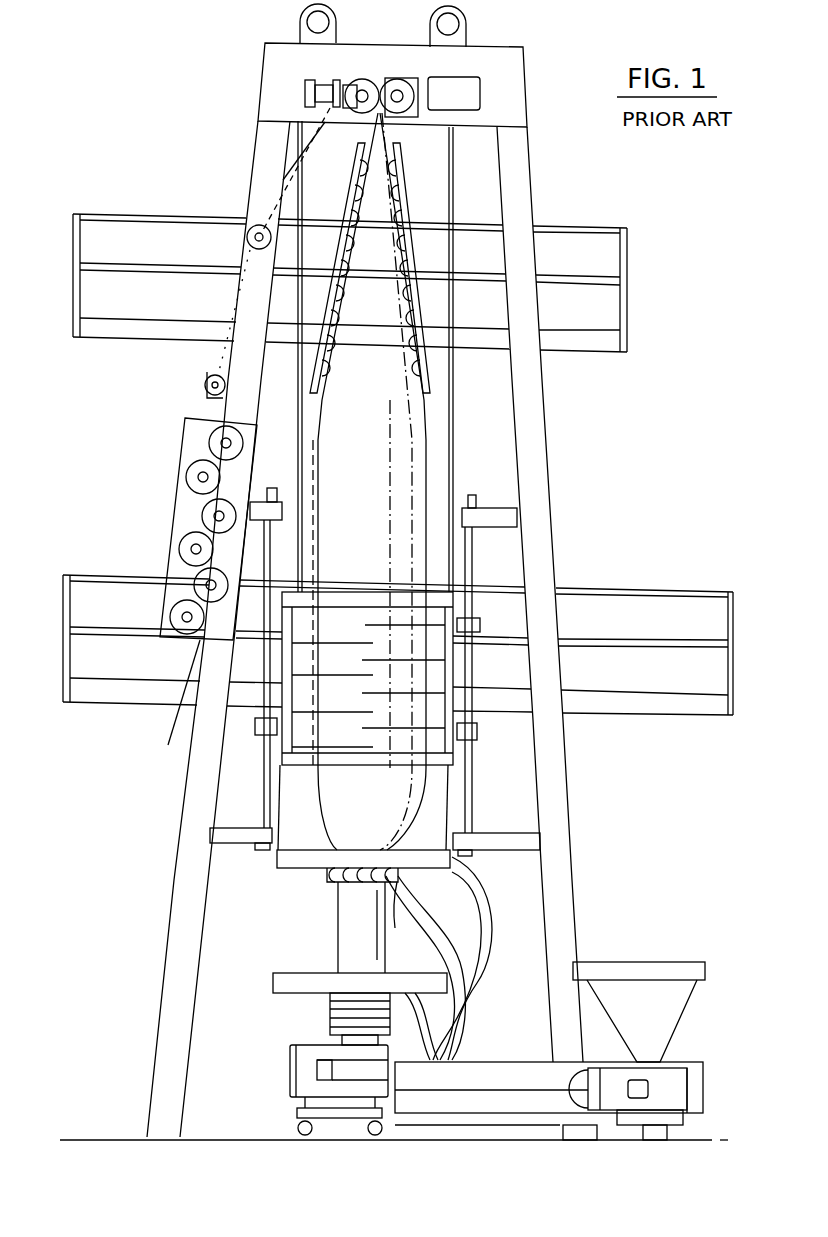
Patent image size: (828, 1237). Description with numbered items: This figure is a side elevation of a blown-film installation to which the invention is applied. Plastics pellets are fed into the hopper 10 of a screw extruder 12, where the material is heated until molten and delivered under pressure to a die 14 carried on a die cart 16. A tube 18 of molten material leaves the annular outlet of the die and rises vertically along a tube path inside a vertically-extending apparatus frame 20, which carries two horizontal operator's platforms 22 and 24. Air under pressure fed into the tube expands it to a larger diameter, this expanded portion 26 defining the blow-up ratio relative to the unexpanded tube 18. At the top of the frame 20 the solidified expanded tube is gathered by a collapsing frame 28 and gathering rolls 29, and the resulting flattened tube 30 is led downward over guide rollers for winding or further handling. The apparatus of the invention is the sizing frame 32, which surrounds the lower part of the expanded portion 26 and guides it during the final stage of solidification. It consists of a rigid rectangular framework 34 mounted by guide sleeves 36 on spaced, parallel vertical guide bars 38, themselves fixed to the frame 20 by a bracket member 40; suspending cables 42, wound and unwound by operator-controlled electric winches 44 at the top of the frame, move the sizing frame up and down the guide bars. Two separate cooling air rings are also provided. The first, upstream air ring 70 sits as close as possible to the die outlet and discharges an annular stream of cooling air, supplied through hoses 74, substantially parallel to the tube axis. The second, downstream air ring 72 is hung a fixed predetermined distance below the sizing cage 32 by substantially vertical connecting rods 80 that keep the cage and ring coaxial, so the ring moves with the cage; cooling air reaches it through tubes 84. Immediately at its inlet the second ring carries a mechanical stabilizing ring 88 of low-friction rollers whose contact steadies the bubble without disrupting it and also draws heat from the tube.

The hopper 10 is at (645, 962).
The screw extruder 12 is at (528, 1062).
The die 14 is at (330, 1020).
The die cart 16 is at (290, 1072).
The tube 18 is at (352, 928).
The apparatus frame 20 is at (543, 538).
The operator's platform 22 is at (673, 590).
The operator's platform 24 is at (600, 228).
The expanded portion 26 is at (412, 462).
The collapsing frame 28 is at (435, 375).
The gathering rolls 29 is at (392, 78).
The flattened tube 30 is at (207, 358).
The sizing frame 32 is at (355, 592).
The rigid rectangular framework 34 is at (455, 752).
The guide sleeves 36 is at (475, 620).
The vertical guide bars 38 is at (455, 663).
The bracket member 40 is at (505, 508).
The suspending cables 42 is at (323, 188).
The electric winches 44 is at (428, 20).
The first cooling air supply ring 70 is at (285, 975).
The second cooling air supply ring 72 is at (293, 862).
The hoses 74 is at (420, 1038).
The connecting rods 80 is at (450, 808).
The tubes 84 is at (465, 952).
The mechanical stabilizing ring 88 is at (408, 916).